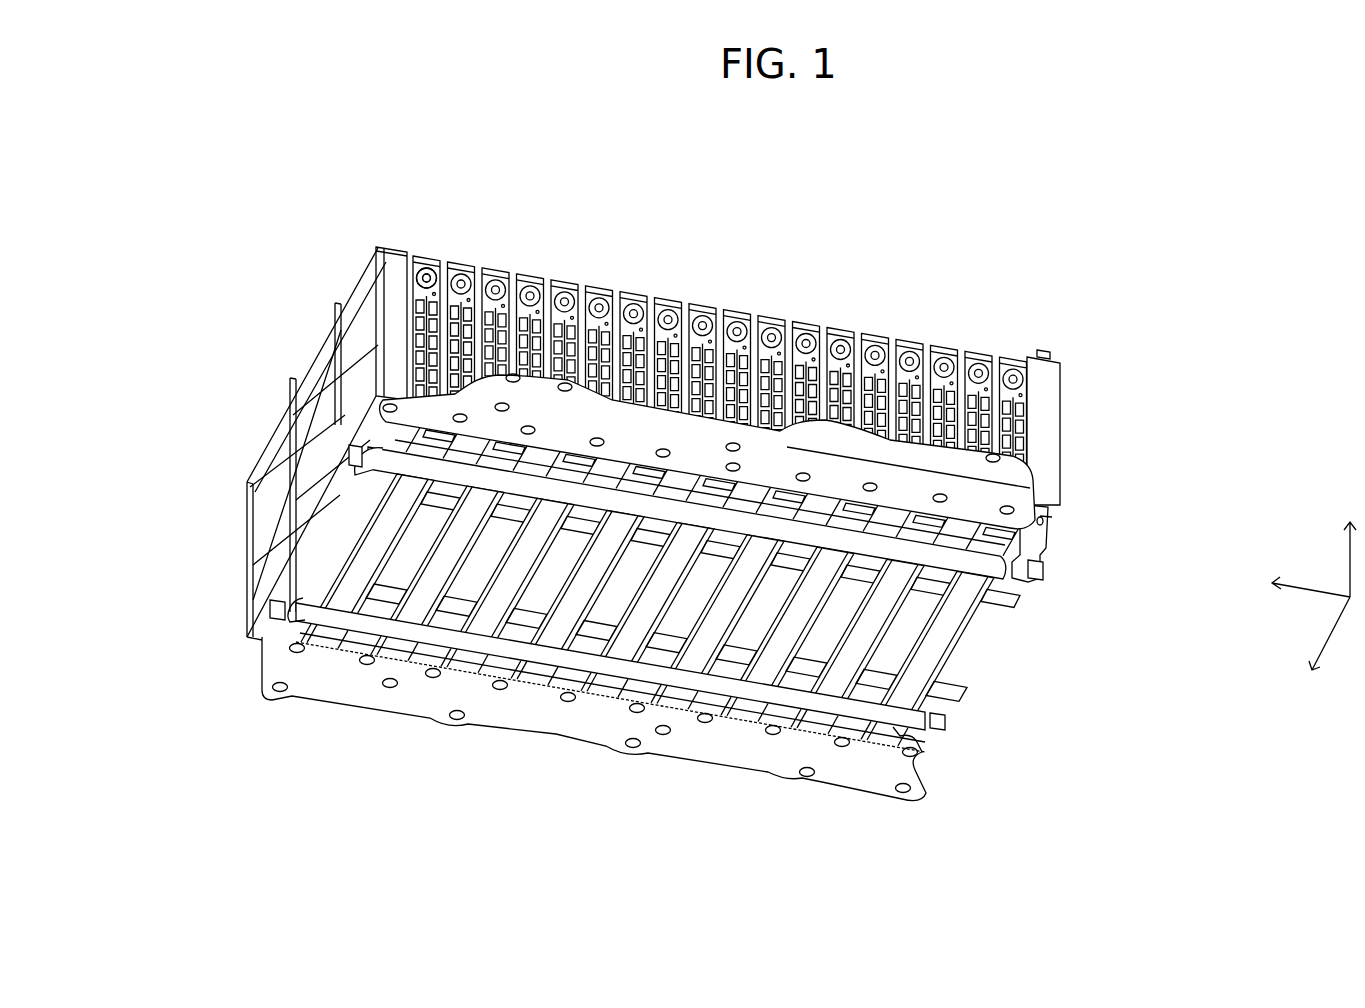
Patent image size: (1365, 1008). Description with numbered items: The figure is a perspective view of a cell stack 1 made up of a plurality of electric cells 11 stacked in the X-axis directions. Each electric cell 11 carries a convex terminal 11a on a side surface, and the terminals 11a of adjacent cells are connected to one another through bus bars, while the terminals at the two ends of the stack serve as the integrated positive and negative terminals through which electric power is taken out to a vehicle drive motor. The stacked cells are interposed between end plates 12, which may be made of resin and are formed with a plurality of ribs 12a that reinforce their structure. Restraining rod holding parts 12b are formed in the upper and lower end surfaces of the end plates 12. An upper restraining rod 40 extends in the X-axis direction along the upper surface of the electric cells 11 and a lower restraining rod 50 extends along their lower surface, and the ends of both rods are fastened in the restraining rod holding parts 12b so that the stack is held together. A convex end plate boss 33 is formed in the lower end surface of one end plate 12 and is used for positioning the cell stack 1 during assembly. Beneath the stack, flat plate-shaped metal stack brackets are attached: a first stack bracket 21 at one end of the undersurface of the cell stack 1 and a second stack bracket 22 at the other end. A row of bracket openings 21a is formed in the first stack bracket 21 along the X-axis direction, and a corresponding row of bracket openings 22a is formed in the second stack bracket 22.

The cell stack 1 is at (748, 222).
The electric cell 11 is at (430, 253).
The terminal 11a is at (429, 266).
The end plate 12 is at (388, 275).
The rib 12a is at (307, 487).
The restraining rod holding part 12b is at (380, 460).
The first stack bracket 21 is at (578, 415).
The bracket opening 21a is at (940, 493).
The second stack bracket 22 is at (570, 722).
The bracket opening 22a is at (773, 735).
The end plate boss 33 is at (1050, 522).
The upper restraining rod 40 is at (335, 312).
The lower restraining rod 50 is at (985, 560).